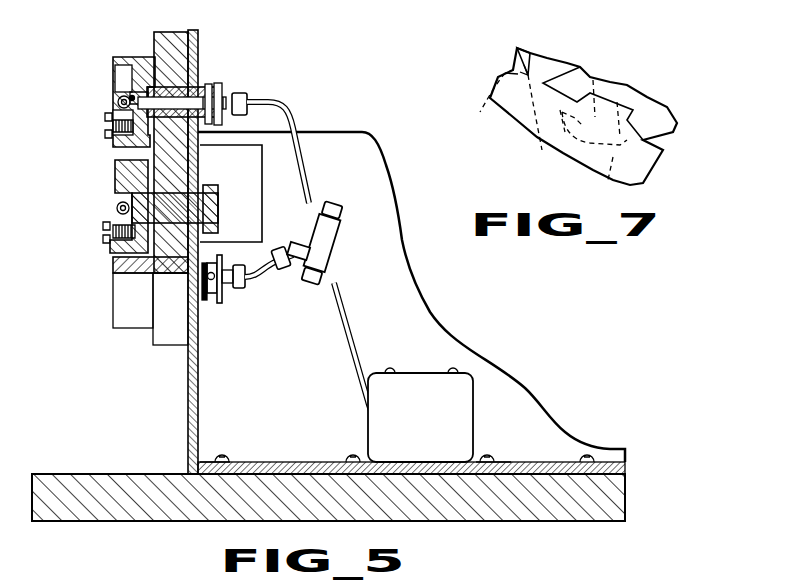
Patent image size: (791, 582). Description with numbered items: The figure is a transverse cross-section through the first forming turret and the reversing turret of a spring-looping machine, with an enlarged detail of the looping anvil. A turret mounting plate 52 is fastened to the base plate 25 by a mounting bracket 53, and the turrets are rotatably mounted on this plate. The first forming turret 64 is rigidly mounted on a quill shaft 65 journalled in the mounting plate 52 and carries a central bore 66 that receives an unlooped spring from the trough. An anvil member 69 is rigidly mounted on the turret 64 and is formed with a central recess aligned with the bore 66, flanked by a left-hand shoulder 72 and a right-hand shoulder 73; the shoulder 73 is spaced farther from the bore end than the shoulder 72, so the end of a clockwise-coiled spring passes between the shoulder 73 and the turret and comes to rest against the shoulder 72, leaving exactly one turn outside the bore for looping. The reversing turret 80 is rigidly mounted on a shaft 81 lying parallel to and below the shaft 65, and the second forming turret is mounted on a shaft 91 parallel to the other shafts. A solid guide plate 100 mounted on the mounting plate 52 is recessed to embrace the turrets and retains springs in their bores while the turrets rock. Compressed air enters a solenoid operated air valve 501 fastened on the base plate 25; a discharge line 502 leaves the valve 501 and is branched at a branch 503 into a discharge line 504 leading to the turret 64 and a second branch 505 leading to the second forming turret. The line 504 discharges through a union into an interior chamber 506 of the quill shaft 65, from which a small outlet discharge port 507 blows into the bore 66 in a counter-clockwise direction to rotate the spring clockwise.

In FIG. 5, the base plate 25 is at (89, 483).
In FIG. 5, the turret mounting plate 52 is at (164, 40).
In FIG. 5, the mounting bracket 53 is at (197, 406).
In FIG. 5, the first forming turret 64 is at (132, 62).
In FIG. 7, the first forming turret 64 is at (655, 113).
In FIG. 5, the quill shaft 65 is at (224, 92).
In FIG. 5, the central bore 66 is at (116, 104).
In FIG. 7, the central bore 66 is at (526, 57).
In FIG. 7, the anvil member 69 is at (535, 132).
In FIG. 7, the left-hand shoulder 72 is at (527, 73).
In FIG. 7, the right-hand shoulder 73 is at (497, 107).
In FIG. 5, the reversing turret 80 is at (130, 174).
In FIG. 5, the shaft 81 is at (206, 219).
In FIG. 5, the shaft 91 is at (222, 303).
In FIG. 5, the guide plate 100 is at (113, 265).
In FIG. 5, the solenoid operated air valve 501 is at (461, 408).
In FIG. 5, the discharge line 502 is at (353, 327).
In FIG. 5, the branch 503 is at (325, 241).
In FIG. 5, the discharge line 504 is at (293, 120).
In FIG. 5, the second branch 505 is at (263, 278).
In FIG. 5, the interior chamber 506 is at (182, 86).
In FIG. 5, the outlet discharge port 507 is at (130, 97).